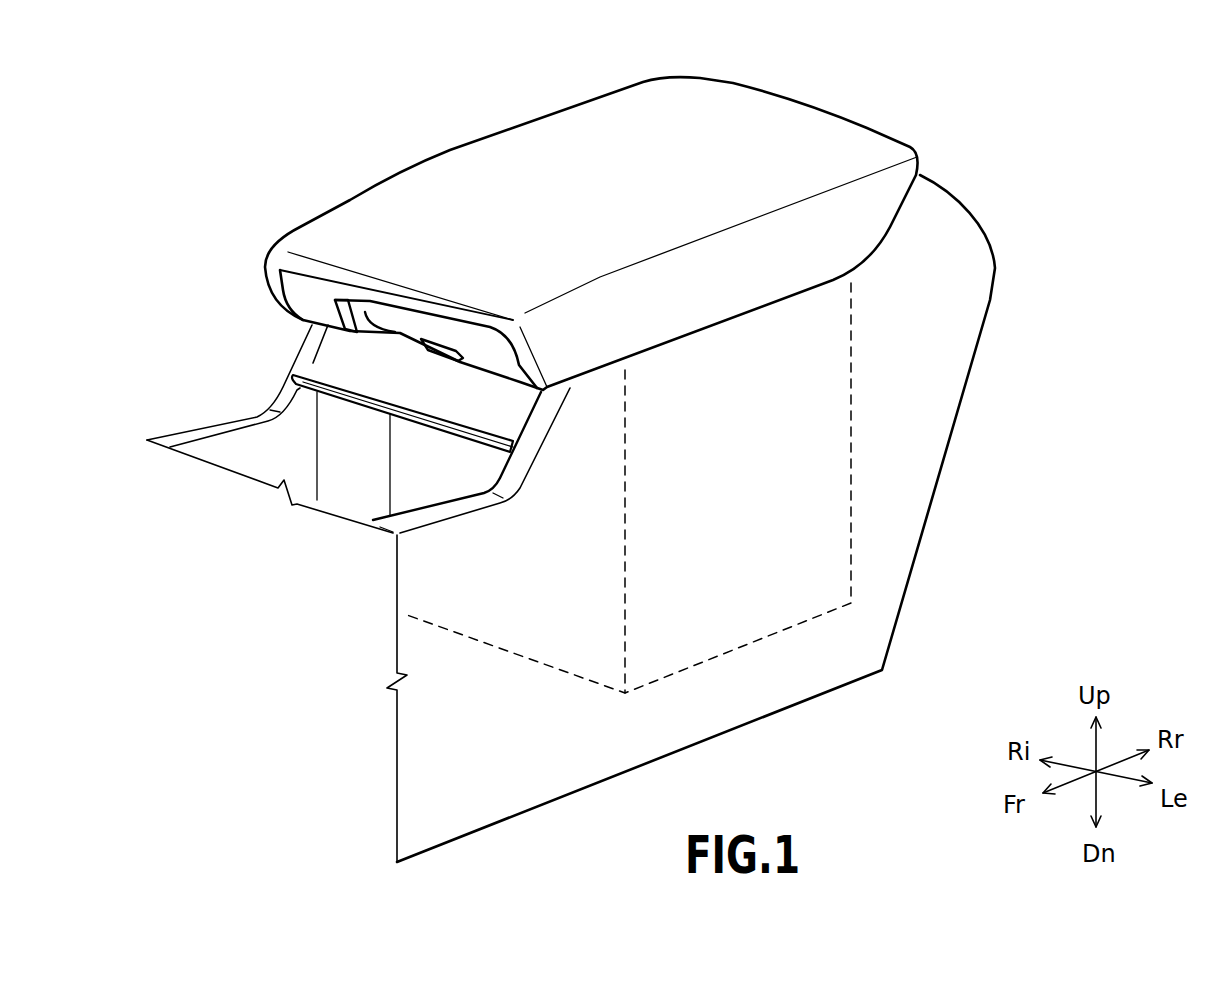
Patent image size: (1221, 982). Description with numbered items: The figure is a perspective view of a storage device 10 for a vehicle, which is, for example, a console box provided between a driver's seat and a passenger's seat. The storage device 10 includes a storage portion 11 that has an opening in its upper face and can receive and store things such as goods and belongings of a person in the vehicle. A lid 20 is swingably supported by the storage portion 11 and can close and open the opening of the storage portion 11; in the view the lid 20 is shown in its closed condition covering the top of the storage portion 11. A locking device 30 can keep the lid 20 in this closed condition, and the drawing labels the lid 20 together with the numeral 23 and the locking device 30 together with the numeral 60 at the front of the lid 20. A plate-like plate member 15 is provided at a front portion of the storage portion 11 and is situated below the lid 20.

The storage device 10 is at (1078, 117).
The storage portion 11 is at (952, 330).
The plate member 15 is at (338, 364).
The lid 20 is at (596, 218).
The lid top panel 23 is at (793, 143).
The locking device 30 is at (431, 261).
The operation handle 60 is at (400, 327).